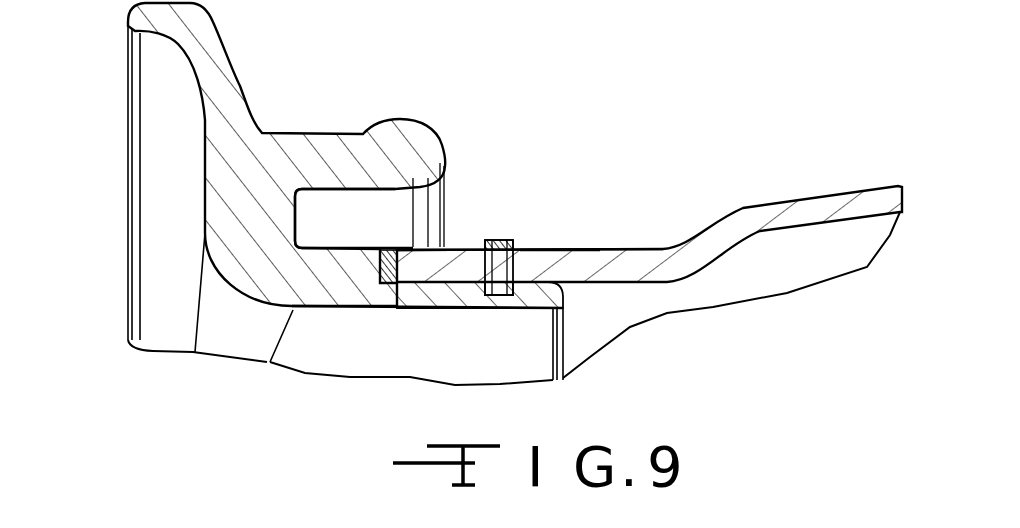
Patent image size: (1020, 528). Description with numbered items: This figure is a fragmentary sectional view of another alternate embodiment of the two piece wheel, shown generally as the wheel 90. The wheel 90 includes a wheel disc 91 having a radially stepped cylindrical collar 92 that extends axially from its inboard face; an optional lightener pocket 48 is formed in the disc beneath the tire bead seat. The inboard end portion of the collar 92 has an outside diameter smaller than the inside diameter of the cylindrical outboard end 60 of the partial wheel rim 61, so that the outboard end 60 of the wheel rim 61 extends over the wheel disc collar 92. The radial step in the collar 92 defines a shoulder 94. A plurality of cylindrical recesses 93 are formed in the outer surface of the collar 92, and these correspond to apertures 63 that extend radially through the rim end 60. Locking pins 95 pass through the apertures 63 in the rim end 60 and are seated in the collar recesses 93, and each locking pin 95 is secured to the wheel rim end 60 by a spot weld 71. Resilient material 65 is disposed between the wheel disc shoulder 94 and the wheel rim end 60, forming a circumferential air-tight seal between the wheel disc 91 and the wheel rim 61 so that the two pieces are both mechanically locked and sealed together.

The lightener pocket 48 is at (323, 213).
The outboard end 60 is at (647, 262).
The partial wheel rim 61 is at (795, 283).
The apertures 63 is at (530, 250).
The resilient material 65 is at (387, 252).
The spot weld 71 is at (513, 242).
The wheel 90 is at (589, 133).
The wheel disc 91 is at (160, 222).
The radially stepped cylindrical collar 92 is at (437, 292).
The cylindrical recesses 93 is at (503, 310).
The shoulder 94 is at (383, 256).
The locking pins 95 is at (498, 240).